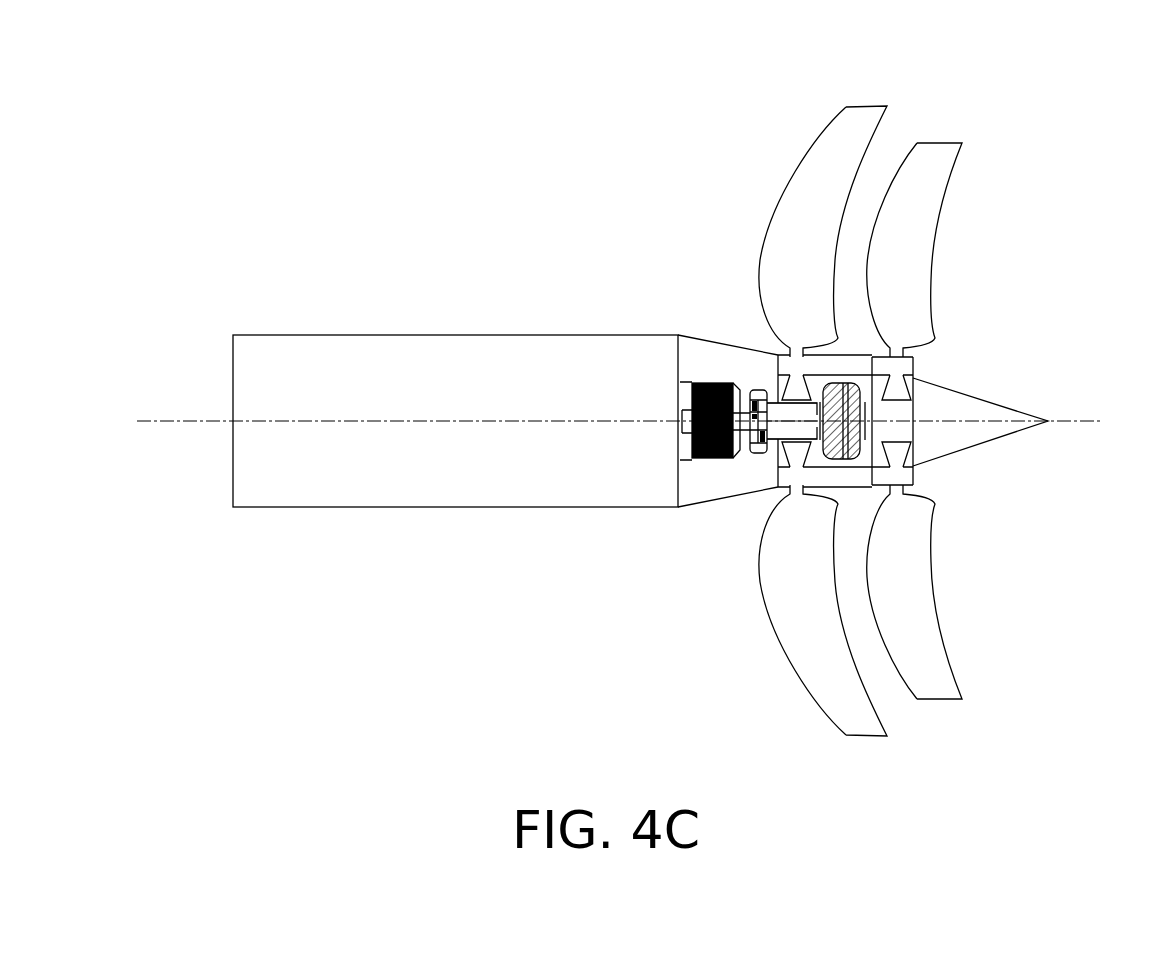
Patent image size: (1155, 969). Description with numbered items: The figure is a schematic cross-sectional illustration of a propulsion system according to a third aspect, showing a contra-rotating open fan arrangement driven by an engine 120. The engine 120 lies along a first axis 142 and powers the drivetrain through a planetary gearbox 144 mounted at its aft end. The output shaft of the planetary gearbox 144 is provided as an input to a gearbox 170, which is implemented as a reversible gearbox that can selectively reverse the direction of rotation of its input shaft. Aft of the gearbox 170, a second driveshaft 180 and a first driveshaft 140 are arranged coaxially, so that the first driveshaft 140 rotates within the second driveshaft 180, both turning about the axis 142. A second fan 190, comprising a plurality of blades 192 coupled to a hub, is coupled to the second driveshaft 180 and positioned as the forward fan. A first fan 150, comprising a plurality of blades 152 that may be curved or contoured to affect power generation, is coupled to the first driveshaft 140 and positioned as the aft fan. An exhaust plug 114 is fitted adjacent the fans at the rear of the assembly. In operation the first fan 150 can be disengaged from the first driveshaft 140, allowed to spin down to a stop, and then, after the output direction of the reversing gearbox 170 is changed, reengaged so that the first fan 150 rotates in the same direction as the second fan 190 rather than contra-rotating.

The exhaust plug 114 is at (1002, 413).
The engine 120 is at (490, 405).
The first driveshaft 140 is at (872, 415).
The first axis 142 is at (200, 421).
The planetary gearbox 144 is at (705, 383).
The first fan 150 is at (967, 404).
The blades 152 is at (923, 243).
The gearbox 170 is at (757, 392).
The second driveshaft 180 is at (795, 433).
The second fan 190 is at (856, 397).
The blades 192 is at (803, 193).